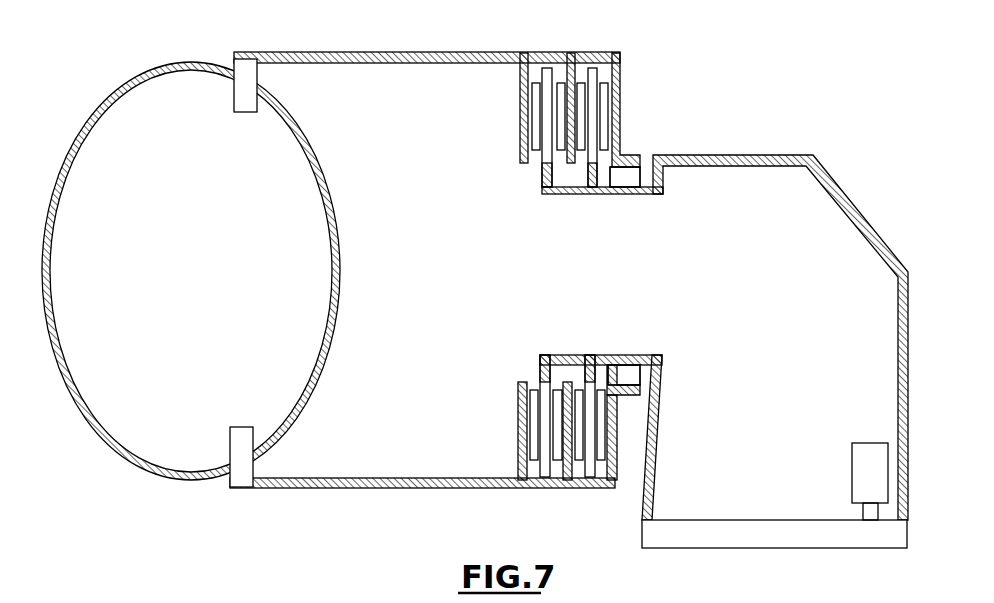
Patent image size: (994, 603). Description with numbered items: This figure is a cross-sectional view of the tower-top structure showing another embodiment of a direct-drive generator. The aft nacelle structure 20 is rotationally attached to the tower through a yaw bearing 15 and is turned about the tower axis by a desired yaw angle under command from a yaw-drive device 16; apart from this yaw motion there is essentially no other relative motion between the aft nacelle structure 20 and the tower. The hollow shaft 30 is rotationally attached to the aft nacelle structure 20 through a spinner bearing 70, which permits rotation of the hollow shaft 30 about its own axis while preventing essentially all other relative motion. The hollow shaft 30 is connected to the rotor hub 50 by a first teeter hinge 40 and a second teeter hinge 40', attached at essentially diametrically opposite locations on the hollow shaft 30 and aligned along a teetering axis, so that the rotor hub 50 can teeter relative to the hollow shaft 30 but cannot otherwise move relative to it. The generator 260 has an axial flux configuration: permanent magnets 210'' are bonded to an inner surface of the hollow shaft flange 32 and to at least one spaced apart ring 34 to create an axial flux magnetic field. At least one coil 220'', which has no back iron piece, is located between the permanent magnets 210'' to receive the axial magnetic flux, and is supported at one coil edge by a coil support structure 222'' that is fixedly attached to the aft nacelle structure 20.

The yaw bearing 15 is at (730, 520).
The yaw-drive device 16 is at (863, 443).
The aft nacelle structure 20 is at (833, 201).
The hollow shaft 30 is at (345, 488).
The hollow shaft flange 32 is at (620, 97).
The spaced apart ring 34 is at (570, 68).
The first teeter hinge 40 is at (229, 114).
The second teeter hinge 40' is at (221, 432).
The rotor hub 50 is at (341, 348).
The spinner bearing 70 is at (627, 181).
The permanent magnets 210'' is at (540, 78).
The coil 220'' is at (549, 462).
The coil support structure 222'' is at (530, 272).
The generator 260 is at (522, 226).